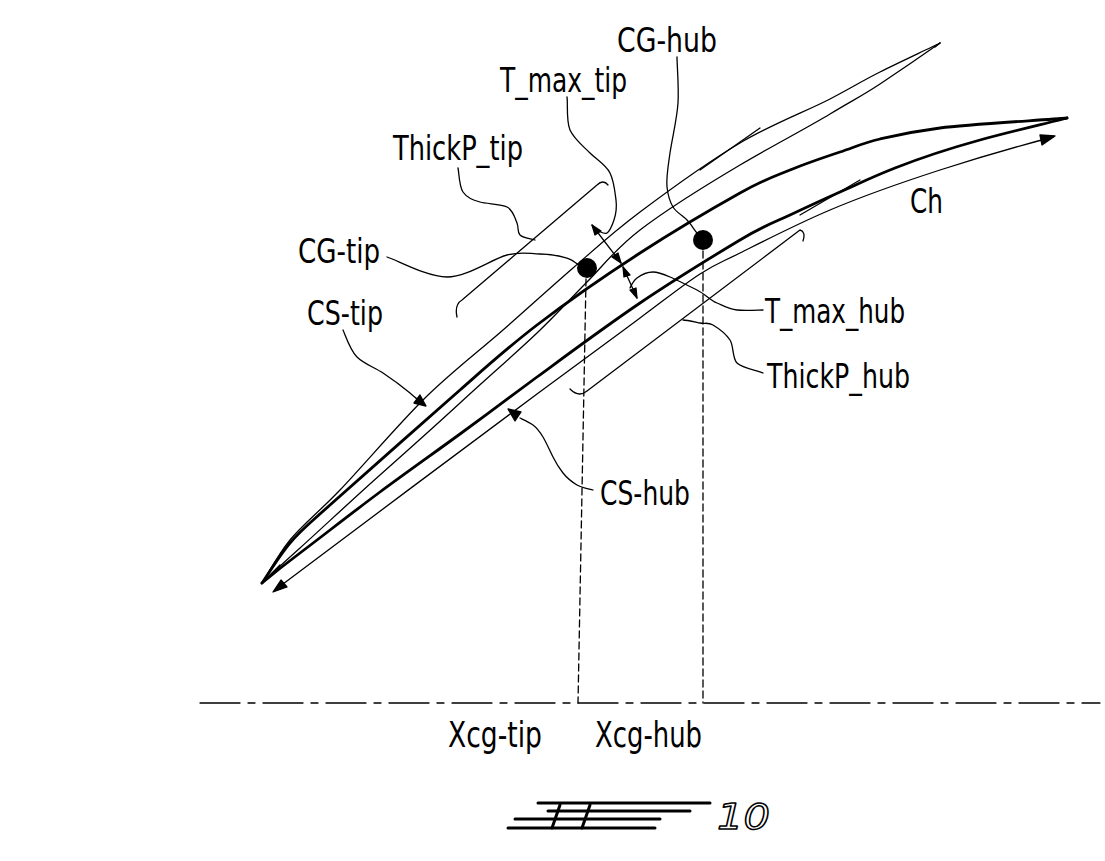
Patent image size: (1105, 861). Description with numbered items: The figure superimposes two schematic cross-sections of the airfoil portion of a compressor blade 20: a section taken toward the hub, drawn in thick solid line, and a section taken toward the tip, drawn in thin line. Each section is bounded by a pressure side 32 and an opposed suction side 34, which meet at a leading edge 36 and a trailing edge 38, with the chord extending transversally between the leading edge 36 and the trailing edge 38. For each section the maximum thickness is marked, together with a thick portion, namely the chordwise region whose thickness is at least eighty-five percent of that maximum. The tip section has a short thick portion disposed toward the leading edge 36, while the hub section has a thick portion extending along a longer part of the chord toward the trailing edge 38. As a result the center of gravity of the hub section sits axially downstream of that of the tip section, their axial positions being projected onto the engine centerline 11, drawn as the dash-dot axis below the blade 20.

The blade 20 is at (358, 153).
The pressure side 32 is at (830, 113).
The suction side 34 is at (730, 148).
The leading edge 36 is at (260, 583).
The trailing edge 38 is at (940, 45).
The centerline 11 is at (960, 700).